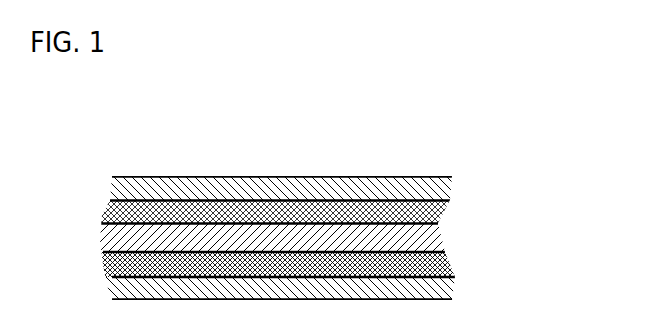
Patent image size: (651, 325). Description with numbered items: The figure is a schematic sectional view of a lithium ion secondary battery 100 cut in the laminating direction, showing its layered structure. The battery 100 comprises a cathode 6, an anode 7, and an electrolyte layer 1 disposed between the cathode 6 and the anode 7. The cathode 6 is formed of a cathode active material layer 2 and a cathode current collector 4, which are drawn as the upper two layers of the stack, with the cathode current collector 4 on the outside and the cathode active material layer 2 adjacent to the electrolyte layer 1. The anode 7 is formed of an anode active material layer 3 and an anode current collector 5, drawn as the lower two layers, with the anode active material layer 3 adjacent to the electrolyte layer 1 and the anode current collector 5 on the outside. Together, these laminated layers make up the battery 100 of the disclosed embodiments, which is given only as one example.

The lithium ion secondary battery 100 is at (333, 195).
The electrolyte layer 1 is at (428, 238).
The cathode active material layer 2 is at (424, 211).
The anode active material layer 3 is at (424, 261).
The cathode current collector 4 is at (430, 190).
The anode current collector 5 is at (443, 281).
The cathode 6 is at (333, 200).
The anode 7 is at (333, 277).